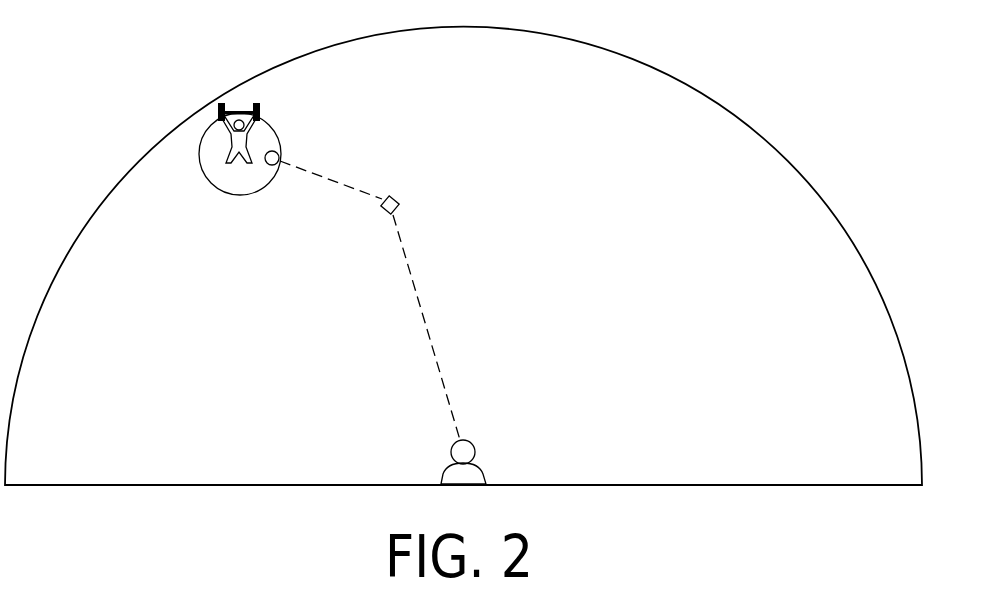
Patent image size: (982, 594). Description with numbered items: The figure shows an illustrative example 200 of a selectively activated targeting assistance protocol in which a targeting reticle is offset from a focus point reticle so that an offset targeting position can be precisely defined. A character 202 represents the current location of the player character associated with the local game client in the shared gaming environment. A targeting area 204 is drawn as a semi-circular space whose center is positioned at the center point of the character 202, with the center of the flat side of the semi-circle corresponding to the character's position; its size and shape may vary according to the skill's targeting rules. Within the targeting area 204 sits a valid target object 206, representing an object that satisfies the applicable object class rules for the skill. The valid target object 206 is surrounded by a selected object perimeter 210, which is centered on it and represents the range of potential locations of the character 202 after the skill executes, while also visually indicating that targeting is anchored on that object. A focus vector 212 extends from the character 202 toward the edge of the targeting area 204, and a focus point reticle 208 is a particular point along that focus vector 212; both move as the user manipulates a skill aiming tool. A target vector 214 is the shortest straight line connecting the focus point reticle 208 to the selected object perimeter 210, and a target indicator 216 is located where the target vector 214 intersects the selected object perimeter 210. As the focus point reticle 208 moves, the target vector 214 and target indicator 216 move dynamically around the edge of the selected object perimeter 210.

The illustrative example 200 is at (836, 65).
The character 202 is at (468, 448).
The targeting area 204 is at (598, 45).
The valid target object 206 is at (243, 141).
The focus point reticle 208 is at (397, 196).
The selected object perimeter 210 is at (226, 193).
The focus vector 212 is at (427, 325).
The target vector 214 is at (342, 185).
The target indicator 216 is at (268, 165).